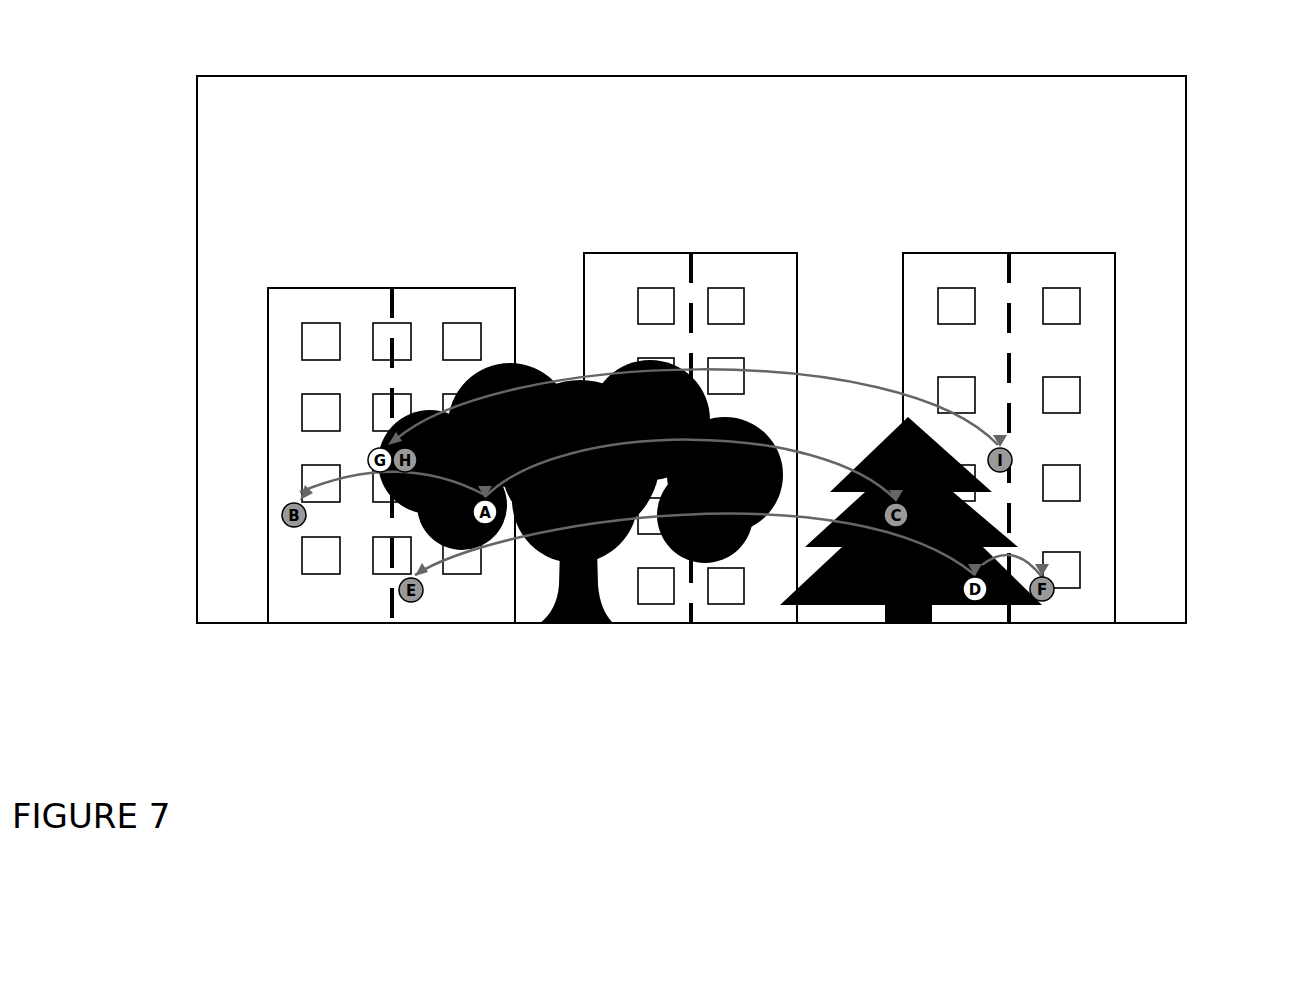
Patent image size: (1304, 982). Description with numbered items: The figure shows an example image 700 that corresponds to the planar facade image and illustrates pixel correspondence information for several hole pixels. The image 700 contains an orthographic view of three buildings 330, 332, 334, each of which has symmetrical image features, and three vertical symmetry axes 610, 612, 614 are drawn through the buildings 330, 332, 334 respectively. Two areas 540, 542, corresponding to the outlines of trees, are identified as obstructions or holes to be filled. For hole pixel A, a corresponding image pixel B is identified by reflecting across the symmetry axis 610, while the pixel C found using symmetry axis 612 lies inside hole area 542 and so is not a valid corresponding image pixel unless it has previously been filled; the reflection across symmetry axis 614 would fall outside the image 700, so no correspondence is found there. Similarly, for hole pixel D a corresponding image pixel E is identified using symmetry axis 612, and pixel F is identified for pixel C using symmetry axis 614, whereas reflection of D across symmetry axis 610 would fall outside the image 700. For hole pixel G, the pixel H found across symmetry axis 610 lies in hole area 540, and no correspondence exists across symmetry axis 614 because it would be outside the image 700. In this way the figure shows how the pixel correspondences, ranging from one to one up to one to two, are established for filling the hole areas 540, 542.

The image 700 is at (111, 775).
The building 330 is at (268, 452).
The building 332 is at (584, 262).
The building 334 is at (1118, 282).
The symmetry axis 610 is at (392, 603).
The symmetry axis 612 is at (697, 332).
The symmetry axis 614 is at (1012, 316).
The area 540 is at (568, 625).
The area 542 is at (872, 608).